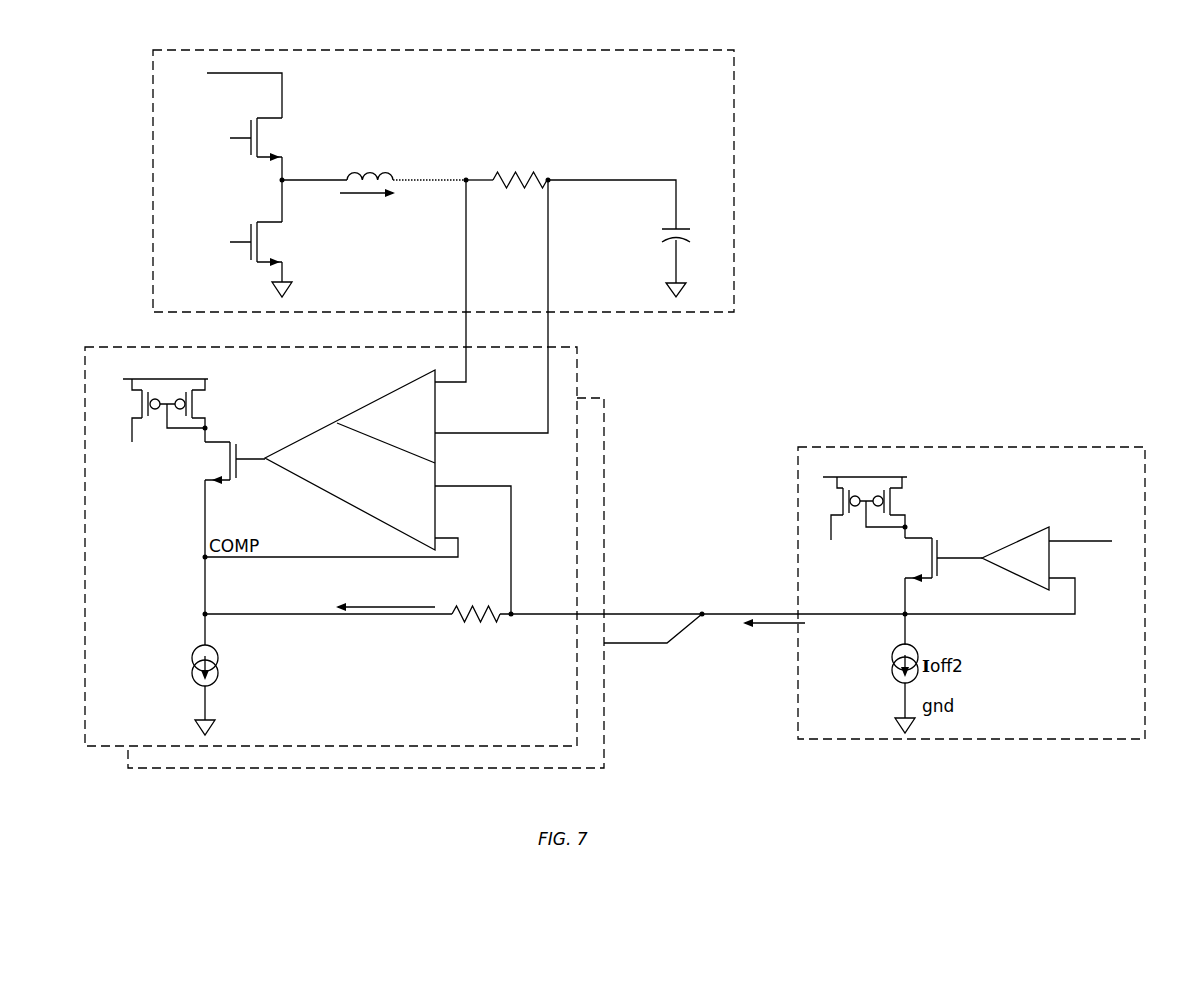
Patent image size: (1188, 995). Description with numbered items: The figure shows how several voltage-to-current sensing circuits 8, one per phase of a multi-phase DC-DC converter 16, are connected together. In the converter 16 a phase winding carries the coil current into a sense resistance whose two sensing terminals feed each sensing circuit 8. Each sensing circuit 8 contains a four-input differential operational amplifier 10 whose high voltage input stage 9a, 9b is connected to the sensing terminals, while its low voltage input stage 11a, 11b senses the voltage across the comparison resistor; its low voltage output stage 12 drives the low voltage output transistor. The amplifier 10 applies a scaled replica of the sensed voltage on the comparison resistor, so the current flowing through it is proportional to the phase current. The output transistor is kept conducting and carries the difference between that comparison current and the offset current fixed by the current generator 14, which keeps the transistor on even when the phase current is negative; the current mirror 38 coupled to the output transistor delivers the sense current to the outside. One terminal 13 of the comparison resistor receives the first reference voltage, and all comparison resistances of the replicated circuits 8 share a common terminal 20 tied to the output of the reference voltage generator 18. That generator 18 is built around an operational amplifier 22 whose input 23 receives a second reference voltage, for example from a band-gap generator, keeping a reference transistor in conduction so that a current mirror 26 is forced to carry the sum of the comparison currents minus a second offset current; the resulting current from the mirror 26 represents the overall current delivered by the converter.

The DC-DC converter 16 is at (692, 50).
The voltage-to-current sensing circuit 8 is at (626, 388).
The current mirror 38 is at (138, 378).
The four-input differential operational amplifier 10 is at (410, 366).
The low voltage output stage 12 is at (256, 455).
The high voltage input stage 9a is at (450, 283).
The high voltage input stage 9b is at (491, 308).
The low voltage input stage 11a is at (473, 540).
The low voltage input stage 11b is at (341, 537).
The terminal of the comparison resistance 13 is at (513, 618).
The current generator 14 is at (218, 660).
The common terminal 20 is at (700, 612).
The reference voltage generator 18 is at (1098, 447).
The current mirror 26 is at (897, 472).
The operational amplifier 22 is at (1012, 545).
The input 23 is at (1080, 543).